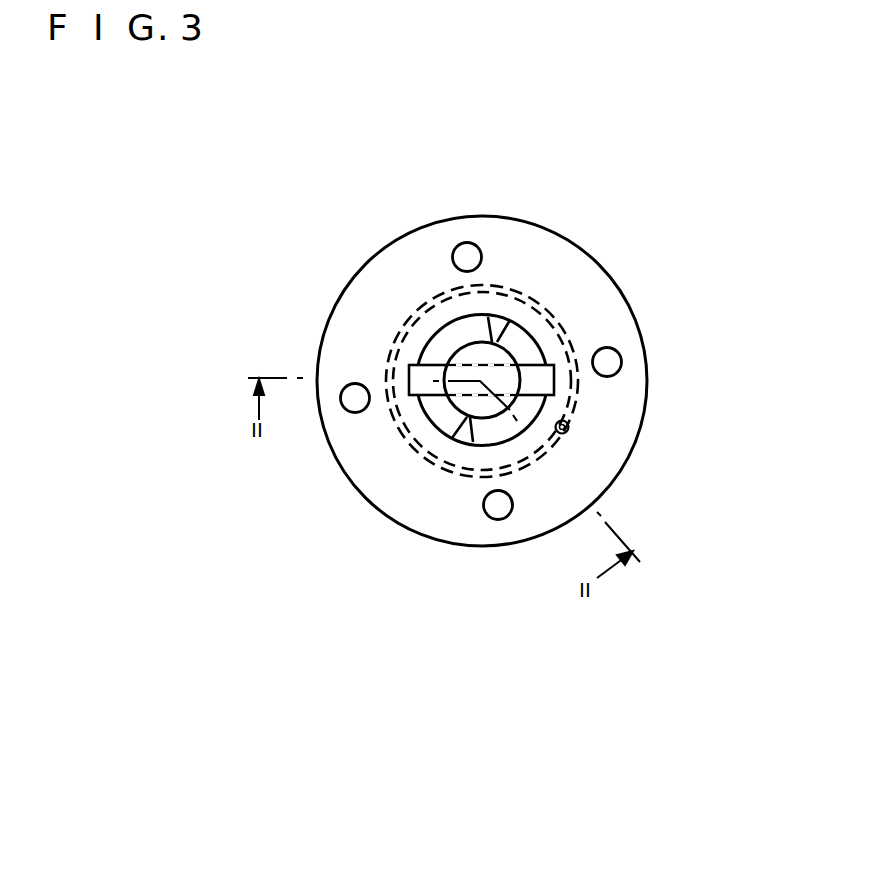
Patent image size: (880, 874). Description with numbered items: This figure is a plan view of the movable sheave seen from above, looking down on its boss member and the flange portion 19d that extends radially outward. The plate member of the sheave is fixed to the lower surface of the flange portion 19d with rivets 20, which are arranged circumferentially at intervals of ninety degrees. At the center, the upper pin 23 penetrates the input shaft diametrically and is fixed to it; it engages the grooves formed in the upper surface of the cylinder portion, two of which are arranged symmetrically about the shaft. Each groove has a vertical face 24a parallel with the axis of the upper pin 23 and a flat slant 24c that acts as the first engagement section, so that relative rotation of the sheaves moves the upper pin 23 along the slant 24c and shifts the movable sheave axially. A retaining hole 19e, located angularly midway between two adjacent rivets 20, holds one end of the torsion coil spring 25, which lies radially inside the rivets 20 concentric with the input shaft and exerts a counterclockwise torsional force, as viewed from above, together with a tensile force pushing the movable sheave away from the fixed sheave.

The flange portion 19d is at (630, 417).
The retaining hole 19e is at (570, 431).
The rivets 20 is at (468, 250).
The upper pin 23 is at (423, 377).
The vertical face 24a is at (485, 328).
The slant 24c is at (445, 347).
The torsion coil spring 25 is at (560, 317).